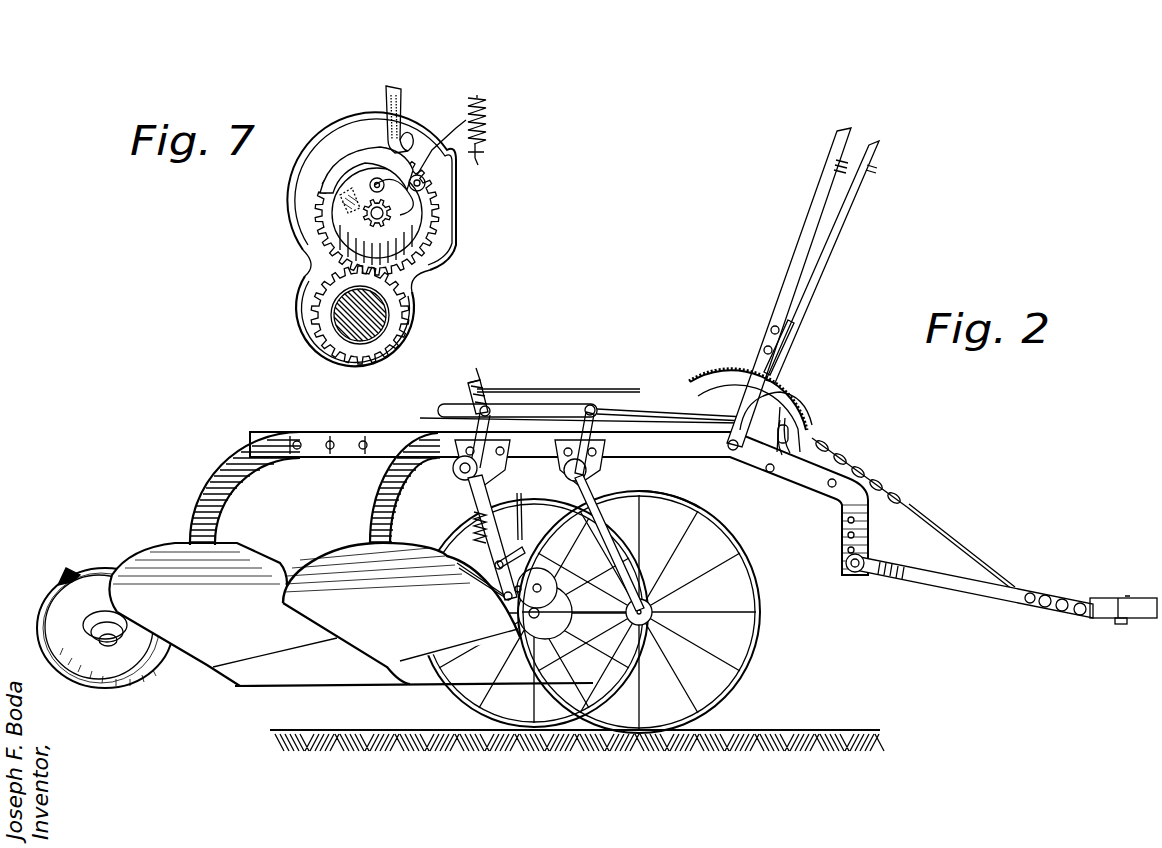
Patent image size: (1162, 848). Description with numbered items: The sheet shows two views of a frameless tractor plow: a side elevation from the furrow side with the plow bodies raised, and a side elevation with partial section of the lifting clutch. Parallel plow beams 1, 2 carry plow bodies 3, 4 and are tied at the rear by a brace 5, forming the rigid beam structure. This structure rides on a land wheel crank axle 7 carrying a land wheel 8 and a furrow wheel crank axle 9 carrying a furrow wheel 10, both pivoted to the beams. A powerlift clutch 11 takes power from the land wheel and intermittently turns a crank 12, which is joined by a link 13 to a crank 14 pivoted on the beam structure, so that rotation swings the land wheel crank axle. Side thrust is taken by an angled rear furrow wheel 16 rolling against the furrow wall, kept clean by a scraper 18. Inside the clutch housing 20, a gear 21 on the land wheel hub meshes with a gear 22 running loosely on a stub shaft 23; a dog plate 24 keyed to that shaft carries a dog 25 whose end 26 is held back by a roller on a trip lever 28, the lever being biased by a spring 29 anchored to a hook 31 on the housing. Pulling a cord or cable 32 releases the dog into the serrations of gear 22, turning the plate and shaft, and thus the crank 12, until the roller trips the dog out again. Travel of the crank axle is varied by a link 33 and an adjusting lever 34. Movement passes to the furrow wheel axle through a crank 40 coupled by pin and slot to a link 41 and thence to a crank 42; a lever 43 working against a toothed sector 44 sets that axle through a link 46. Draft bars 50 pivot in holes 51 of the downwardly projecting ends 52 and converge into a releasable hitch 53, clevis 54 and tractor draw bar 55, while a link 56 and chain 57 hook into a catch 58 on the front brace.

In FIG. 2, the plow beam 1 is at (252, 455).
In FIG. 2, the plow beam 2 is at (400, 493).
In FIG. 2, the plow body 3 is at (235, 555).
In FIG. 2, the plow body 4 is at (340, 562).
In FIG. 2, the brace 5 is at (338, 450).
In FIG. 7, the land wheel crank axle 7 is at (337, 317).
In FIG. 2, the land wheel crank axle 7 is at (476, 479).
In FIG. 2, the land wheel 8 is at (465, 540).
In FIG. 2, the furrow wheel crank axle 9 is at (590, 500).
In FIG. 2, the furrow wheel 10 is at (758, 632).
In FIG. 2, the clutch 11 is at (618, 552).
In FIG. 2, the crank 12 is at (505, 580).
In FIG. 2, the link 13 is at (660, 503).
In FIG. 2, the crank 14 is at (558, 398).
In FIG. 2, the rear furrow wheel 16 is at (104, 568).
In FIG. 2, the scraper 18 is at (68, 568).
In FIG. 7, the housing 20 is at (312, 213).
In FIG. 7, the gear 21 is at (395, 325).
In FIG. 7, the gear 22 is at (425, 243).
In FIG. 7, the stub shaft 23 is at (385, 215).
In FIG. 7, the dog plate 24 is at (353, 165).
In FIG. 7, the dog 25 is at (352, 195).
In FIG. 7, the end of dog 26 is at (419, 177).
In FIG. 7, the trip lever 28 is at (390, 112).
In FIG. 2, the trip lever 28 is at (478, 383).
In FIG. 7, the spring 29 is at (487, 112).
In FIG. 2, the spring 29 is at (460, 476).
In FIG. 2, the hook 31 is at (480, 540).
In FIG. 2, the cord or cable 32 is at (620, 388).
In FIG. 2, the link 33 is at (768, 398).
In FIG. 2, the adjusting lever 34 is at (822, 275).
In FIG. 2, the crank 40 is at (470, 422).
In FIG. 2, the link 41 is at (505, 408).
In FIG. 2, the crank 42 is at (572, 410).
In FIG. 2, the lever 43 is at (797, 262).
In FIG. 2, the toothed sector 44 is at (760, 372).
In FIG. 2, the link 46 is at (640, 412).
In FIG. 2, the draft bars 50 is at (968, 588).
In FIG. 2, the holes 51 is at (846, 540).
In FIG. 2, the downwardly projecting ends 52 is at (842, 512).
In FIG. 2, the releasable hitch 53 is at (1055, 597).
In FIG. 2, the clevis 54 is at (1103, 597).
In FIG. 2, the draw bar 55 is at (1148, 618).
In FIG. 2, the link 56 is at (950, 538).
In FIG. 2, the chain 57 is at (845, 458).
In FIG. 2, the catch 58 is at (808, 430).